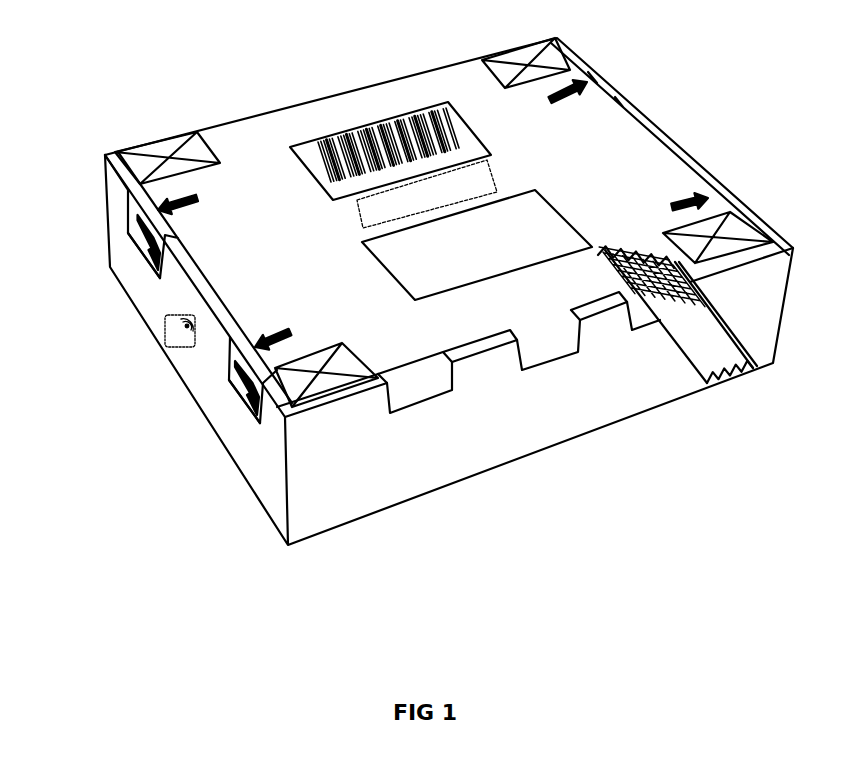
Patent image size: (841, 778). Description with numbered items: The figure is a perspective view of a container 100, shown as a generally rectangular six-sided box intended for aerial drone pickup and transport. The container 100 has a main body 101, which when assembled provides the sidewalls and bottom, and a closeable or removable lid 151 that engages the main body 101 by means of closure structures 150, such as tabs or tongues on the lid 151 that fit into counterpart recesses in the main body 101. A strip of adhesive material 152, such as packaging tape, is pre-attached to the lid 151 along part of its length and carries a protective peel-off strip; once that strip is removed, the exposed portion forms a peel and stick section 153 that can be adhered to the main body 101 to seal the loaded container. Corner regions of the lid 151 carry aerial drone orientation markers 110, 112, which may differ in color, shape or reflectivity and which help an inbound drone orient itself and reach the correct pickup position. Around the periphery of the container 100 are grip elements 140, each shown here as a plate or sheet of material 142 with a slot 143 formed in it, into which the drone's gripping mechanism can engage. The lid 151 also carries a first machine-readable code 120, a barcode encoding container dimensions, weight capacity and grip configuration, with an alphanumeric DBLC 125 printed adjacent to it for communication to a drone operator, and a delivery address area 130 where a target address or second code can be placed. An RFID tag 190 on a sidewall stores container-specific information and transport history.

The container 100 is at (125, 517).
The main body 101 is at (262, 492).
The aerial drone orientation marker 110 is at (108, 152).
The aerial drone orientation marker 112 is at (112, 195).
The first machine-readable code 120 is at (353, 127).
The alphanumeric DBLC 125 is at (357, 212).
The delivery address area 130 is at (535, 192).
The grip element 140 is at (124, 257).
The plate or sheet of material 142 is at (133, 233).
The slot 143 is at (133, 270).
The closure structure 150 is at (452, 390).
The lid 151 is at (465, 97).
The strip of adhesive material 152 is at (658, 283).
The peel and stick section 153 is at (707, 325).
The RFID tag 190 is at (166, 345).